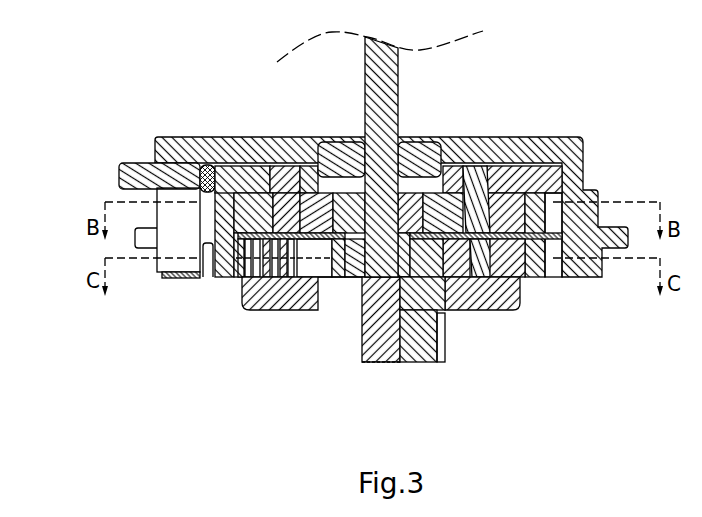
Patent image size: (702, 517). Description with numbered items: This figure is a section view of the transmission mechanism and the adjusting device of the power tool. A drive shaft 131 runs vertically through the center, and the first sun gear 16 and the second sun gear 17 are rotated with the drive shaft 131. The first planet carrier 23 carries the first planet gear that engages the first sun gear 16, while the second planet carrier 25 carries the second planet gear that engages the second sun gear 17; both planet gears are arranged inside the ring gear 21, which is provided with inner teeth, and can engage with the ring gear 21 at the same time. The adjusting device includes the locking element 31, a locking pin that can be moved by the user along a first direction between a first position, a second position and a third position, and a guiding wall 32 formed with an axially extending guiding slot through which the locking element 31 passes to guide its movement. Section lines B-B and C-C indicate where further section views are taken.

The drive shaft 131 is at (373, 98).
The first sun gear 16 is at (408, 190).
The second sun gear 17 is at (428, 283).
The ring gear 21 is at (225, 278).
The first planet carrier 23 is at (528, 170).
The second planet carrier 25 is at (303, 293).
The locking element 31 is at (135, 178).
The guiding wall 32 is at (573, 167).